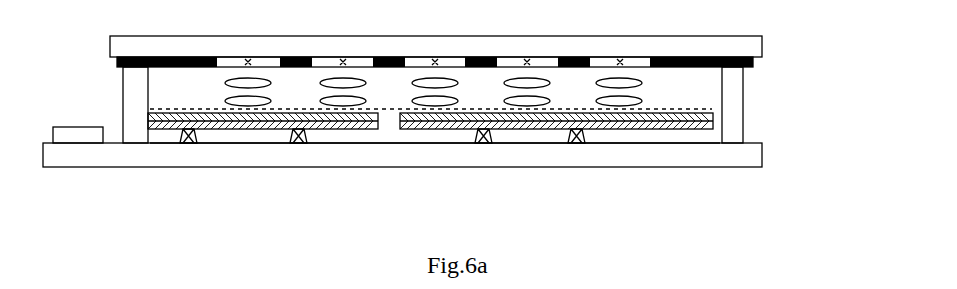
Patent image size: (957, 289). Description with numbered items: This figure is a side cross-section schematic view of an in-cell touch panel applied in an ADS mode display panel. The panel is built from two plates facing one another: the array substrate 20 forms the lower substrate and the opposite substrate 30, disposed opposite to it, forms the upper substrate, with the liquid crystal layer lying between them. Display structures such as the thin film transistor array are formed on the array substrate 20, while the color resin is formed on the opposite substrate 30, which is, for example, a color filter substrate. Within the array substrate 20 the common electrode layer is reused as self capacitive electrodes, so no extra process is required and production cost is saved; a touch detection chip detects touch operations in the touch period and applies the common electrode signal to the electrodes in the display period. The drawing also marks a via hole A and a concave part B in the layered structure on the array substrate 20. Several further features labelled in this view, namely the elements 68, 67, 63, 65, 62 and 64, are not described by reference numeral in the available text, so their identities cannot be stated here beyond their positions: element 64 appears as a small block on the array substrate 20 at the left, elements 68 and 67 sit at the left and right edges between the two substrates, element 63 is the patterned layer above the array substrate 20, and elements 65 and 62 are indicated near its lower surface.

The opposite substrate 30 is at (785, 47).
The array substrate 20 is at (793, 157).
The sealant 68 is at (148, 122).
The sealant / spacer 67 is at (707, 136).
The electrode layer 63 is at (446, 160).
The contact pad 65 is at (335, 170).
The via hole A is at (522, 167).
The concave part B is at (616, 168).
The insulating layer 62 is at (435, 183).
The driver chip 64 is at (103, 171).